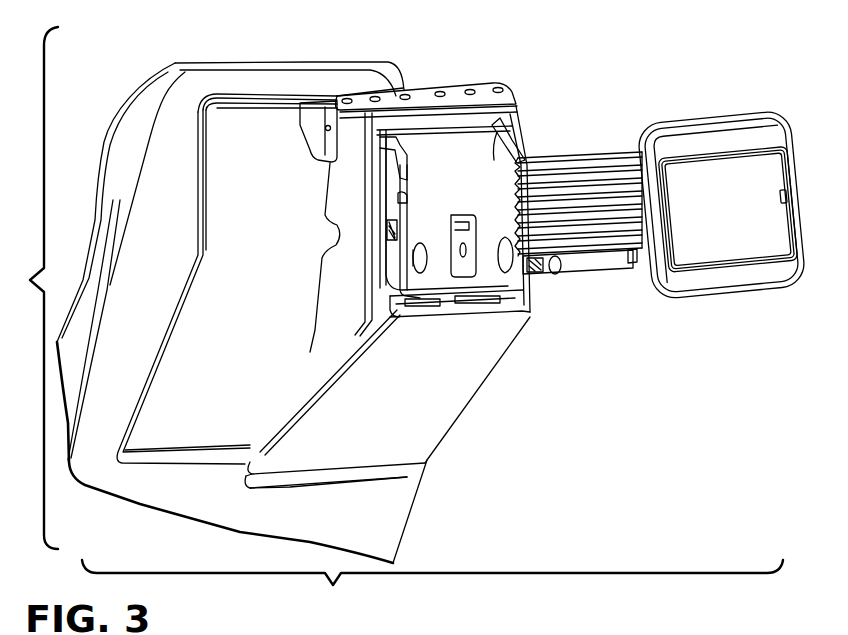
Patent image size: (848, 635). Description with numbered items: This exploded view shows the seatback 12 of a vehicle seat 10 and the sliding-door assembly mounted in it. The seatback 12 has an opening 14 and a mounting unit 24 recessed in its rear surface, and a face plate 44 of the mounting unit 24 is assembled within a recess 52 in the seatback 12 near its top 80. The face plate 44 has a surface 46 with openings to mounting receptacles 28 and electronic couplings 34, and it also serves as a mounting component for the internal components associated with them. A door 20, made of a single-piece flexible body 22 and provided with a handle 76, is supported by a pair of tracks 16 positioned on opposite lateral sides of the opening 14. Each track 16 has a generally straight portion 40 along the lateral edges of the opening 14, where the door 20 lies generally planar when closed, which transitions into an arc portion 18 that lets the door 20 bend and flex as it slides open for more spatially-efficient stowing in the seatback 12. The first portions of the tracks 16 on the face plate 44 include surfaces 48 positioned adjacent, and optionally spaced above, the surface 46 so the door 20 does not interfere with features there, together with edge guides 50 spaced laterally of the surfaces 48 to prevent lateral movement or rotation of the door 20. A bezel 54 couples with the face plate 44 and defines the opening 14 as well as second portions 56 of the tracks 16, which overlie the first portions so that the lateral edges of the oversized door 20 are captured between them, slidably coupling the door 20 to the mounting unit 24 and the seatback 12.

The vehicle seat 10 is at (667, 72).
The seatback 12 is at (240, 54).
The opening 14 is at (695, 177).
The track 16 is at (423, 223).
The arc portion 18 is at (407, 160).
The door 20 is at (557, 158).
The flexible body 22 is at (572, 234).
The mounting unit 24 is at (601, 128).
The mounting receptacle 28 is at (390, 300).
The electronic coupling 34 is at (487, 317).
The generally straight portion 40 is at (405, 224).
The face plate 44 is at (441, 402).
The surface 46 is at (508, 122).
The surface 48 is at (397, 245).
The edge guide 50 is at (403, 207).
The recess 52 is at (176, 436).
The bezel 54 is at (778, 270).
The second portion 56 is at (786, 234).
The handle 76 is at (600, 265).
The top 80 is at (178, 70).